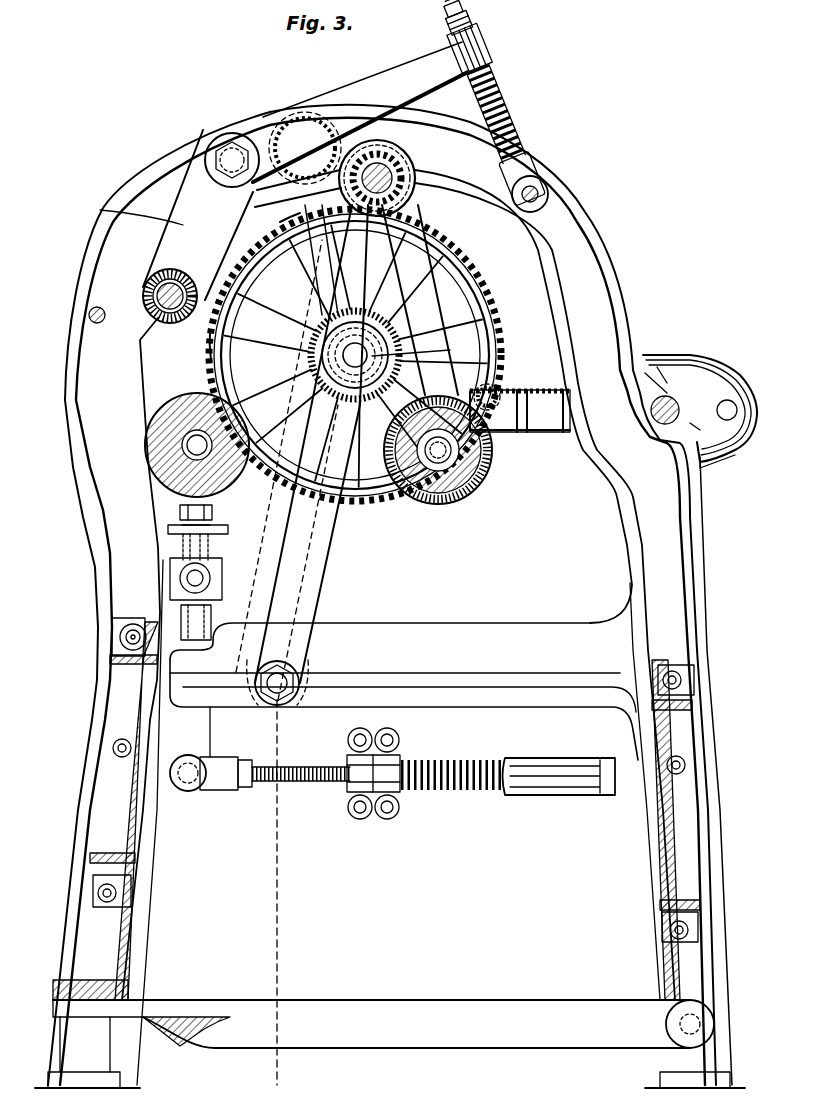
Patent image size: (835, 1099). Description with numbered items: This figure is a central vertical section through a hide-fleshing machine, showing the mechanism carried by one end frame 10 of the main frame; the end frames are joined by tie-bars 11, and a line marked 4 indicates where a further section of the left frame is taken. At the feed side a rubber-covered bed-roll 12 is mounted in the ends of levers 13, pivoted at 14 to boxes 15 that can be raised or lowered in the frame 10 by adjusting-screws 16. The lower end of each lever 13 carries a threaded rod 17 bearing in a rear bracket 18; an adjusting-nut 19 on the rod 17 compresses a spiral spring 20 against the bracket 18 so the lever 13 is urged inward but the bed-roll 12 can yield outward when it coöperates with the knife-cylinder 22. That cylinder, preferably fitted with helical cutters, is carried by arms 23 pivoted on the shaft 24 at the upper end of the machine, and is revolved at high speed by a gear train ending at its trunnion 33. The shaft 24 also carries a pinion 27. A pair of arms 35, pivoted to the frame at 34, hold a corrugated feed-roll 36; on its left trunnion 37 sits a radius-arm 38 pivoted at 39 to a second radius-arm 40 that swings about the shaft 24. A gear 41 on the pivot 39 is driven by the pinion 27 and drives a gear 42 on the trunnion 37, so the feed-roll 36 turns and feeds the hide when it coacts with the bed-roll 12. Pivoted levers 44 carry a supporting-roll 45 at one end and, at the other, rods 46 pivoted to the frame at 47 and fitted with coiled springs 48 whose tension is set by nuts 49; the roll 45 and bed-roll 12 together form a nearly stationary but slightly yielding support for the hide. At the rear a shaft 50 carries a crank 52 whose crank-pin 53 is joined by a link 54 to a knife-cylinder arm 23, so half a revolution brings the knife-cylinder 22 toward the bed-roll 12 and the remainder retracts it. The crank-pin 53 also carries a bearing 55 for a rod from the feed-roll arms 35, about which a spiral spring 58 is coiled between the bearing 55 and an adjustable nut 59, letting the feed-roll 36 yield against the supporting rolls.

The cutting plane line 4 is at (305, 160).
The end frame 10 is at (612, 268).
The tie-bar 11 is at (138, 836).
The bed-roll 12 is at (185, 415).
The lever 13 is at (204, 728).
The pivot 14 is at (212, 575).
The box 15 is at (222, 592).
The adjusting-screw 16 is at (212, 512).
The threaded rod 17 is at (300, 768).
The bracket 18 is at (542, 796).
The adjusting-nut 19 is at (398, 760).
The spiral spring 20 is at (445, 790).
The knife-cylinder 22 is at (490, 464).
The arm 23 is at (440, 275).
The shaft 24 is at (370, 140).
The pinion 27 is at (400, 90).
The knife-cylinder trunnion 33 is at (452, 490).
The pivot 34 is at (277, 705).
The arm 35 is at (330, 545).
The feed-roll 36 is at (312, 356).
The left trunnion 37 is at (424, 300).
The radius-arm 38 is at (328, 268).
The pivot 39 is at (258, 135).
The second radius-arm 40 is at (318, 115).
The gear 41 is at (290, 214).
The gear 42 is at (208, 342).
The lever 44 is at (505, 62).
The supporting-roll 45 is at (145, 280).
The rod 46 is at (466, 4).
The pivot 47 is at (540, 185).
The coiled spring 48 is at (505, 112).
The nut 49 is at (478, 26).
The shaft 50 is at (670, 405).
The crank 52 is at (722, 388).
The crank-pin 53 is at (730, 410).
The link 54 is at (540, 400).
The bearing 55 is at (735, 452).
The spiral spring 58 is at (520, 388).
The nut 59 is at (493, 385).